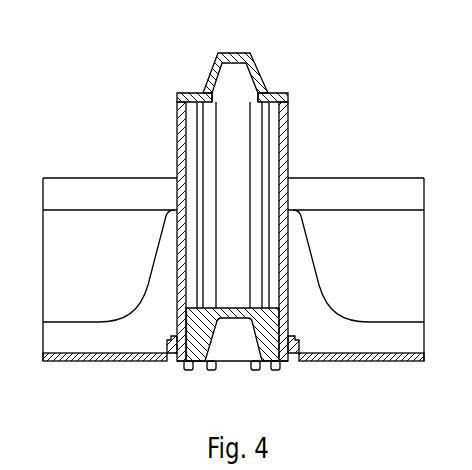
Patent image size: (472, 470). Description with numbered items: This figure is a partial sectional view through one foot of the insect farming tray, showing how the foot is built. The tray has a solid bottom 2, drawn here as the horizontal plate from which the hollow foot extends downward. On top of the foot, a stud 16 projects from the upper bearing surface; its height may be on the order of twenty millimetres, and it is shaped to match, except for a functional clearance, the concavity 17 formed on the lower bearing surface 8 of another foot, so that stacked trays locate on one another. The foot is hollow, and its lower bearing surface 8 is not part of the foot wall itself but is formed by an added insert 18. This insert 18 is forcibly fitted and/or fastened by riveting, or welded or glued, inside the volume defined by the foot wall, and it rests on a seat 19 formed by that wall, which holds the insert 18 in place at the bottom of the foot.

The bottom 2 is at (65, 362).
The lower bearing surface 8 is at (182, 362).
The stud 16 is at (236, 53).
The concavity 17 is at (274, 93).
The insert 18 is at (194, 345).
The seat 19 is at (287, 363).